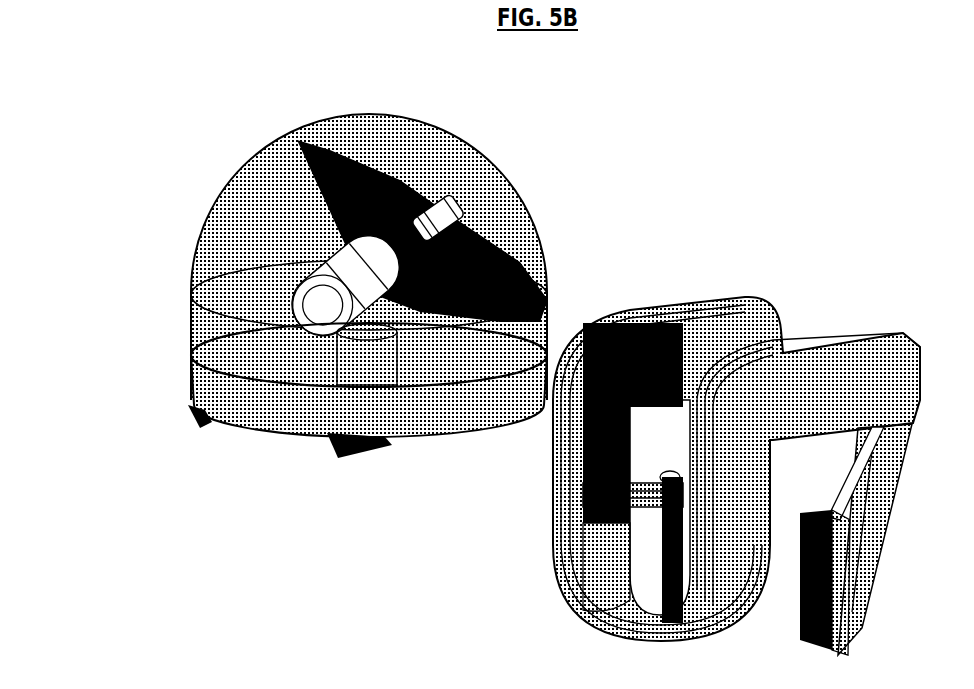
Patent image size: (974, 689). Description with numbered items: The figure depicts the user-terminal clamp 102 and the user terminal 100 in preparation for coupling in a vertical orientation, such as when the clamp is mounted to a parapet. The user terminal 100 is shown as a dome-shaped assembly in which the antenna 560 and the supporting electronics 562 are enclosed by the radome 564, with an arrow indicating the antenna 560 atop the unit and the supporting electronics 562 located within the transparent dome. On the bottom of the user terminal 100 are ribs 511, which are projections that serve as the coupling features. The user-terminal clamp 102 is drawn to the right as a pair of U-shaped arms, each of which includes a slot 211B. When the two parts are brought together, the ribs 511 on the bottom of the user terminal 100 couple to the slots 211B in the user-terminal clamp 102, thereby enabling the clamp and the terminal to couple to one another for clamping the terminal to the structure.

The user terminal 100 is at (336, 300).
The user-terminal clamp 102 is at (743, 416).
The slot 211B is at (677, 297).
The ribs 511 is at (247, 449).
The antenna 560 is at (410, 178).
The supporting electronics 562 is at (288, 302).
The radome 564 is at (242, 165).